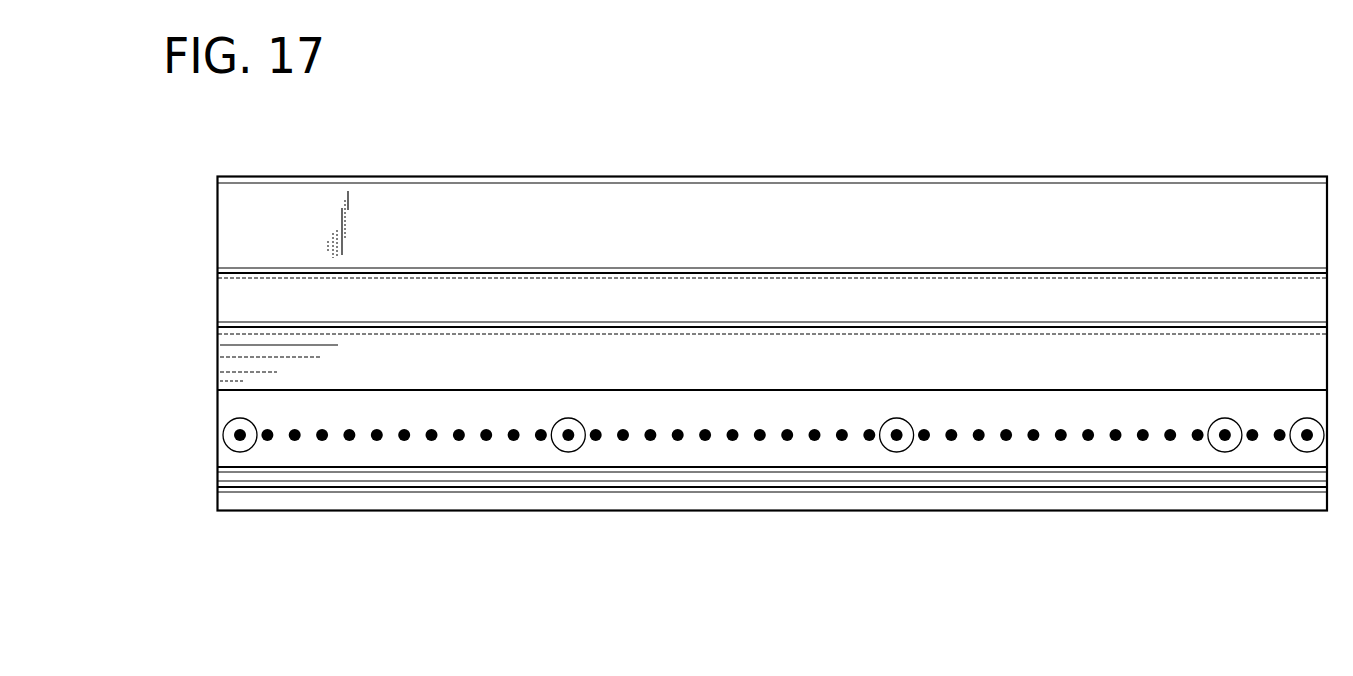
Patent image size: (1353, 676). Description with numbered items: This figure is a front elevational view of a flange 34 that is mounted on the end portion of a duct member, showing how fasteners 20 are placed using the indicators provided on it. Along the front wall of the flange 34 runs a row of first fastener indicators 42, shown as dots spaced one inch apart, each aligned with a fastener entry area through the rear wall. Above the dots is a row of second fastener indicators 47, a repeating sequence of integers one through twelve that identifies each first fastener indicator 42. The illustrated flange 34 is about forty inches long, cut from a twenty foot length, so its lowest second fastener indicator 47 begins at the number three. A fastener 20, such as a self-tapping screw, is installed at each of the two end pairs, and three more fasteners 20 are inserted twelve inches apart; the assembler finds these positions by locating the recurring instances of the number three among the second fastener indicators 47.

The fastener 20 is at (780, 501).
The flange 34 is at (228, 476).
The first fastener indicator 42 is at (236, 434).
The second fastener indicator 47 is at (236, 410).